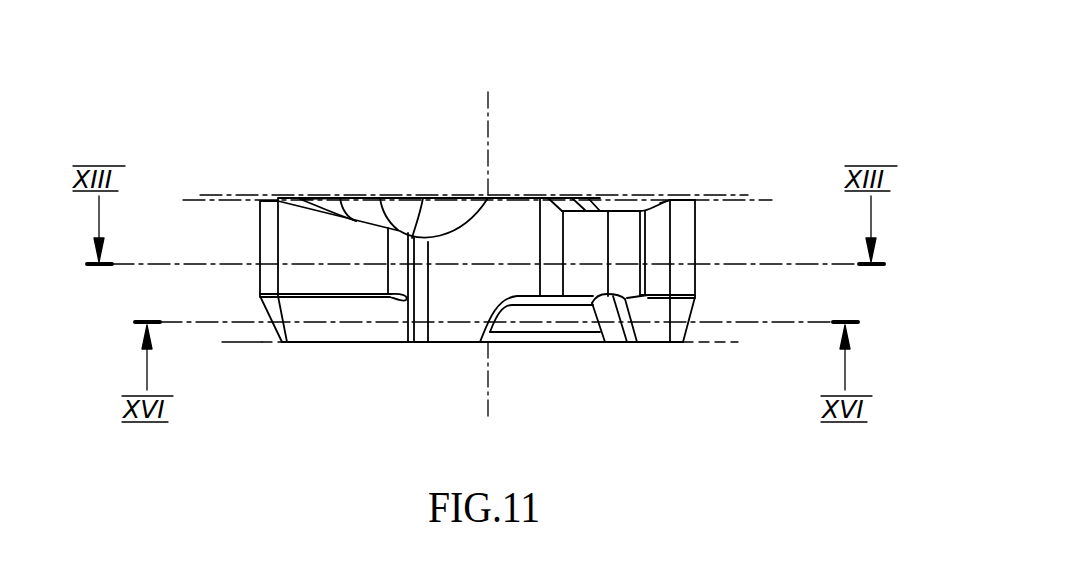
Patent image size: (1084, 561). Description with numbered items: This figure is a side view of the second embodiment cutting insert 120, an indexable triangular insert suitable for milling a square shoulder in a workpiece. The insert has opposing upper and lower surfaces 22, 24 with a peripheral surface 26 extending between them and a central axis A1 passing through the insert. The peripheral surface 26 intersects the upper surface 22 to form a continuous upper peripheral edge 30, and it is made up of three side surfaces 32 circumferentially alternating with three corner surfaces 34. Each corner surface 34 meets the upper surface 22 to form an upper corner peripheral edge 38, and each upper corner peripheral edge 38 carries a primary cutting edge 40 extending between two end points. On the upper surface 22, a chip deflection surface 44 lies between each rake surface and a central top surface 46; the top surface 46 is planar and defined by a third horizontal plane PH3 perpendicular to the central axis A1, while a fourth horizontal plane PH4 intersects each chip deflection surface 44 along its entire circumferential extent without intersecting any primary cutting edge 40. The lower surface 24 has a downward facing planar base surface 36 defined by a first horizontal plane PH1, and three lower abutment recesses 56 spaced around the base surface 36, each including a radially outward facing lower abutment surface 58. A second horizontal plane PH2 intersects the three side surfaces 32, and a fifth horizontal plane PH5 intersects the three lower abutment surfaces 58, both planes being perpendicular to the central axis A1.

The cutting insert 120 is at (650, 141).
The upper surface 22 is at (563, 197).
The lower surface 24 is at (358, 346).
The peripheral surface 26 is at (668, 276).
The upper peripheral edge 30 is at (448, 218).
The side surface 32 is at (510, 252).
The corner surface 34 is at (325, 276).
The base surface 36 is at (448, 343).
The upper corner peripheral edge 38 is at (303, 208).
The primary cutting edge 40 is at (333, 206).
The chip deflection surface 44 is at (372, 206).
The top surface 46 is at (521, 198).
The lower abutment recess 56 is at (580, 314).
The lower abutment surface 58 is at (533, 333).
The first horizontal plane PH1 is at (482, 340).
The second horizontal plane PH2 is at (487, 263).
The third horizontal plane PH3 is at (473, 182).
The fourth horizontal plane PH4 is at (477, 200).
The fifth horizontal plane PH5 is at (496, 320).
The central axis A1 is at (488, 255).